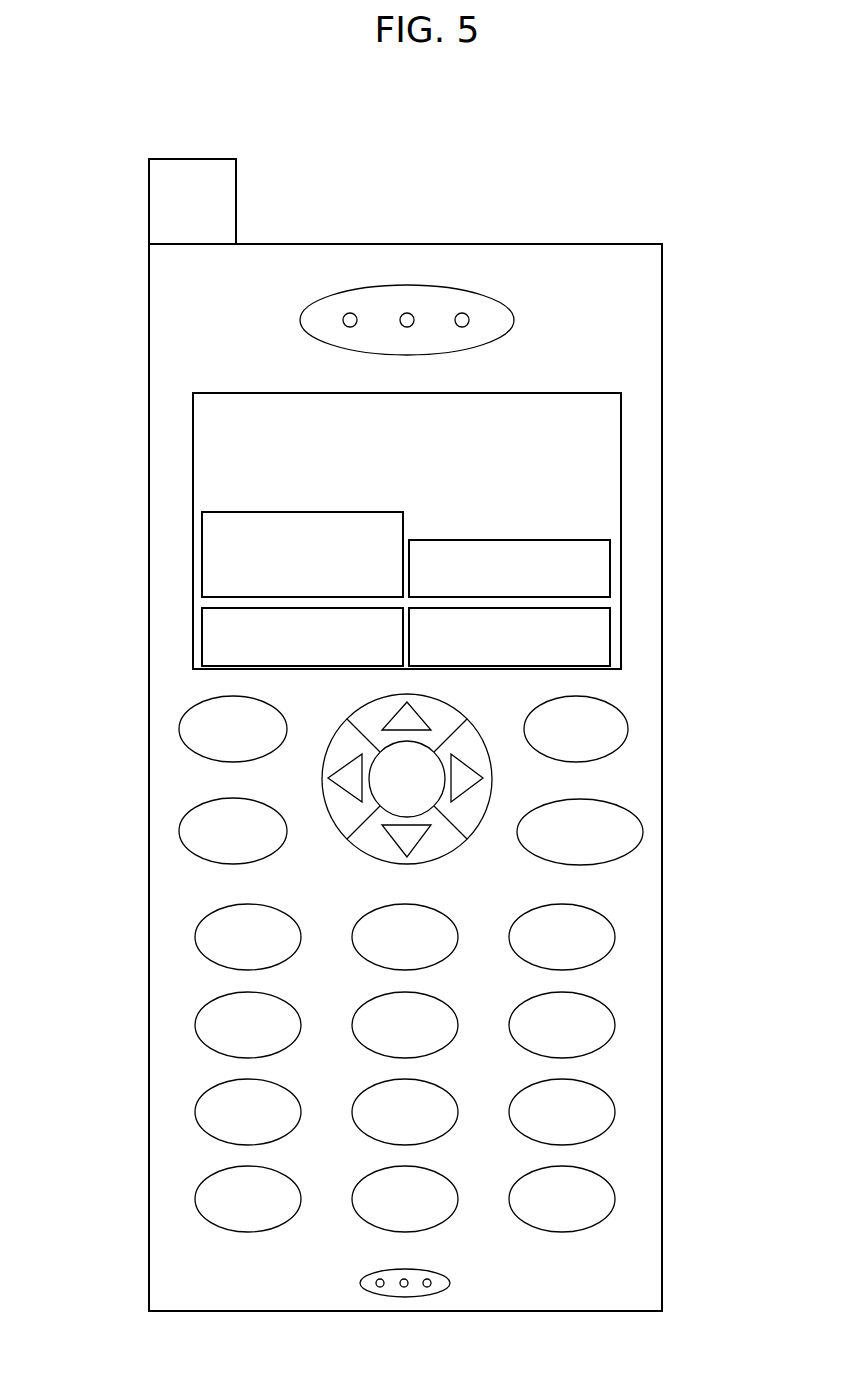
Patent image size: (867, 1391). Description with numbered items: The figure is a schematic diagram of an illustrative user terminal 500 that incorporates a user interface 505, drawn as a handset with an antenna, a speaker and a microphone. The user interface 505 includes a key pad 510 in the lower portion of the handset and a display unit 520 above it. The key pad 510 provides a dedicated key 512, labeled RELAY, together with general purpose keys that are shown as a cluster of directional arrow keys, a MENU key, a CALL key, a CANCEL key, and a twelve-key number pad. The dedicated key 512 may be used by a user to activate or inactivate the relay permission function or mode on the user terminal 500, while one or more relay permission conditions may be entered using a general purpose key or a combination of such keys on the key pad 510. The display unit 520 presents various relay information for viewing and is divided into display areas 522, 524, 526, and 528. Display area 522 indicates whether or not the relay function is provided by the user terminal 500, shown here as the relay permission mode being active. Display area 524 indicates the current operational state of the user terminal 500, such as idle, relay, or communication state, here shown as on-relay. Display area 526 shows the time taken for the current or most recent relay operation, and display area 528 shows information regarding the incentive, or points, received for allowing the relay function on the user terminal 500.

The user terminal 500 is at (470, 135).
The user interface 505 is at (162, 359).
The key pad 510 is at (401, 972).
The dedicated key 512 is at (628, 729).
The display unit 520 is at (621, 456).
The display area 522 is at (202, 573).
The display area 524 is at (202, 640).
The display area 526 is at (610, 568).
The display area 528 is at (610, 635).